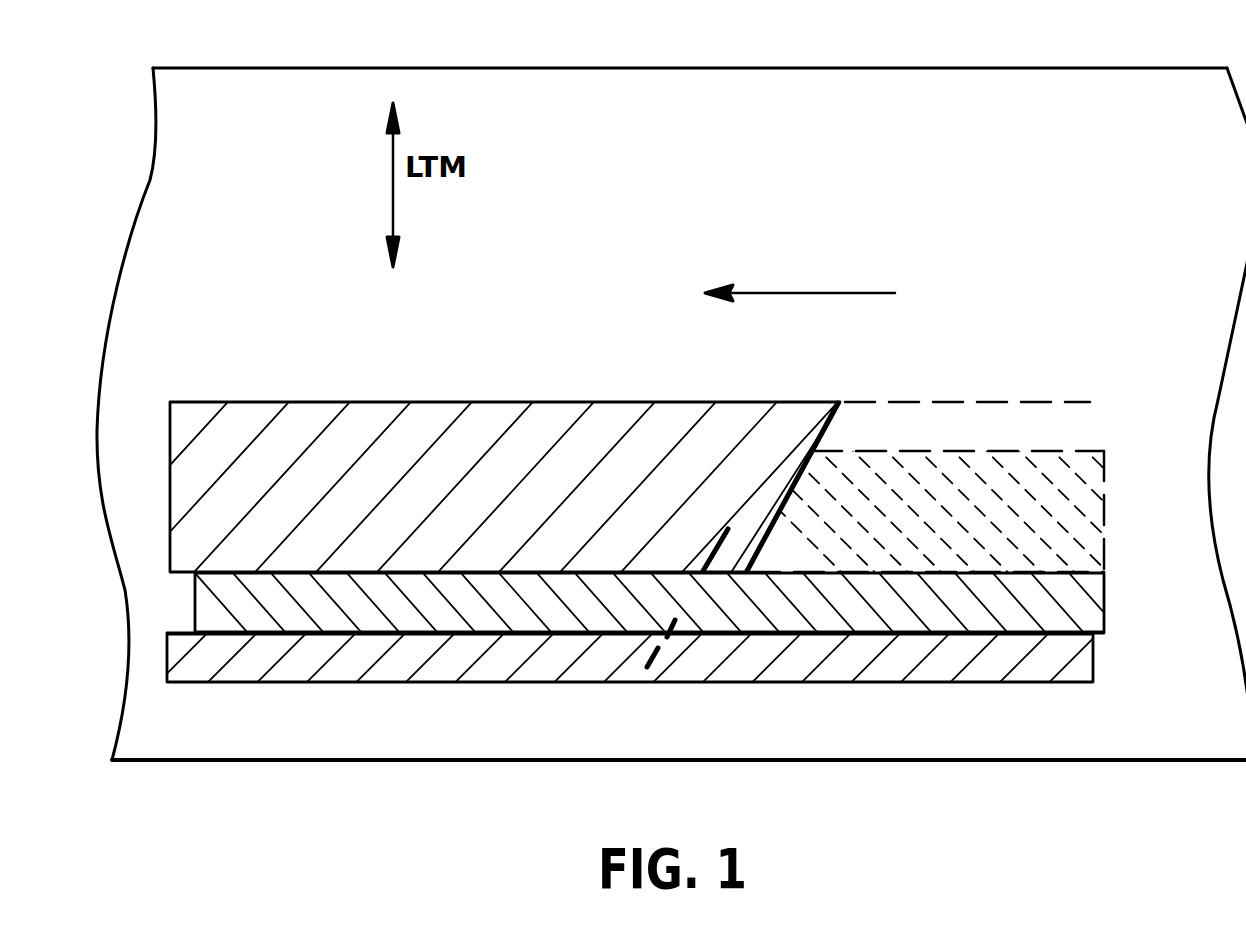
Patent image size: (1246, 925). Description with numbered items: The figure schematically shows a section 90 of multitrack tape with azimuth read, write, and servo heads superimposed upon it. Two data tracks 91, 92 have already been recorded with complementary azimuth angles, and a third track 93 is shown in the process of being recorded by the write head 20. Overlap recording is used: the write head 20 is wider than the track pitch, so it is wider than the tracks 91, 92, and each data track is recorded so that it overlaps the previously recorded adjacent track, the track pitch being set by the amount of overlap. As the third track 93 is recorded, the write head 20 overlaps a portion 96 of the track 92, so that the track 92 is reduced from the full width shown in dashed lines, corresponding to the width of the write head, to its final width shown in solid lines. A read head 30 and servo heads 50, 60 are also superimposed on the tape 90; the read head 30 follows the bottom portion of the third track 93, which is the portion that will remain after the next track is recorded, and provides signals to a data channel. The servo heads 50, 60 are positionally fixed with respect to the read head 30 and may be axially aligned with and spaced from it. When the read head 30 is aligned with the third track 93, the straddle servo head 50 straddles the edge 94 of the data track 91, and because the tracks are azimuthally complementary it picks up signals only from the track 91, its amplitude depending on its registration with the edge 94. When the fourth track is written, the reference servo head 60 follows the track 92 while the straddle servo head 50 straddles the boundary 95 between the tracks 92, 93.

The section of tape 90 is at (738, 68).
The third track 93 is at (170, 470).
The data track 92 is at (193, 588).
The data track 91 is at (167, 676).
The edge of data track 94 is at (1104, 632).
The edge of track 95 is at (1104, 571).
The portion of track 96 is at (1106, 488).
The write head 20 is at (815, 440).
The read head 30 is at (705, 560).
The straddle servo head 50 is at (670, 640).
The reference servo head 60 is at (647, 658).